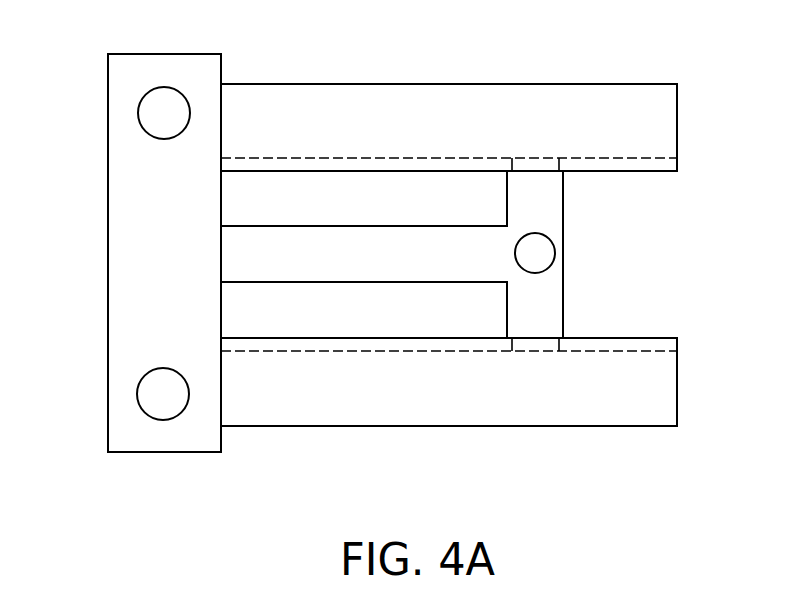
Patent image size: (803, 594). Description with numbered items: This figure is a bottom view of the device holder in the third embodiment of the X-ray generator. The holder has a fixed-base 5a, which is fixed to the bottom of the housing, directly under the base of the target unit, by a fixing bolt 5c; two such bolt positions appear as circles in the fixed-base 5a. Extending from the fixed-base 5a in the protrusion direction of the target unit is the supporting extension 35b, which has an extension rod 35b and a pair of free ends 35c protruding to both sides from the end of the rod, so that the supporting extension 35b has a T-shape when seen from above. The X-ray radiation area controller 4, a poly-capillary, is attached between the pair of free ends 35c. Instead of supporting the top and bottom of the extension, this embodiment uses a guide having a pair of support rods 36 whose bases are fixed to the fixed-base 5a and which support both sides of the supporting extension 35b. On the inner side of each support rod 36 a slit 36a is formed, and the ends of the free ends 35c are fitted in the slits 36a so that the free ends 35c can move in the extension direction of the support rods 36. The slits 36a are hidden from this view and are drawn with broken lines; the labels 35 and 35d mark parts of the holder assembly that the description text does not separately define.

The X-ray radiation area controller 4 is at (555, 253).
The fixed-base 5a is at (108, 350).
The fixing bolt 5c is at (171, 87).
The holder member 35 is at (490, 245).
The supporting extension 35b is at (403, 283).
The free ends 35c is at (563, 198).
The hidden tabs 35d is at (535, 158).
The support rods 36 is at (677, 120).
The slit 36a is at (655, 159).